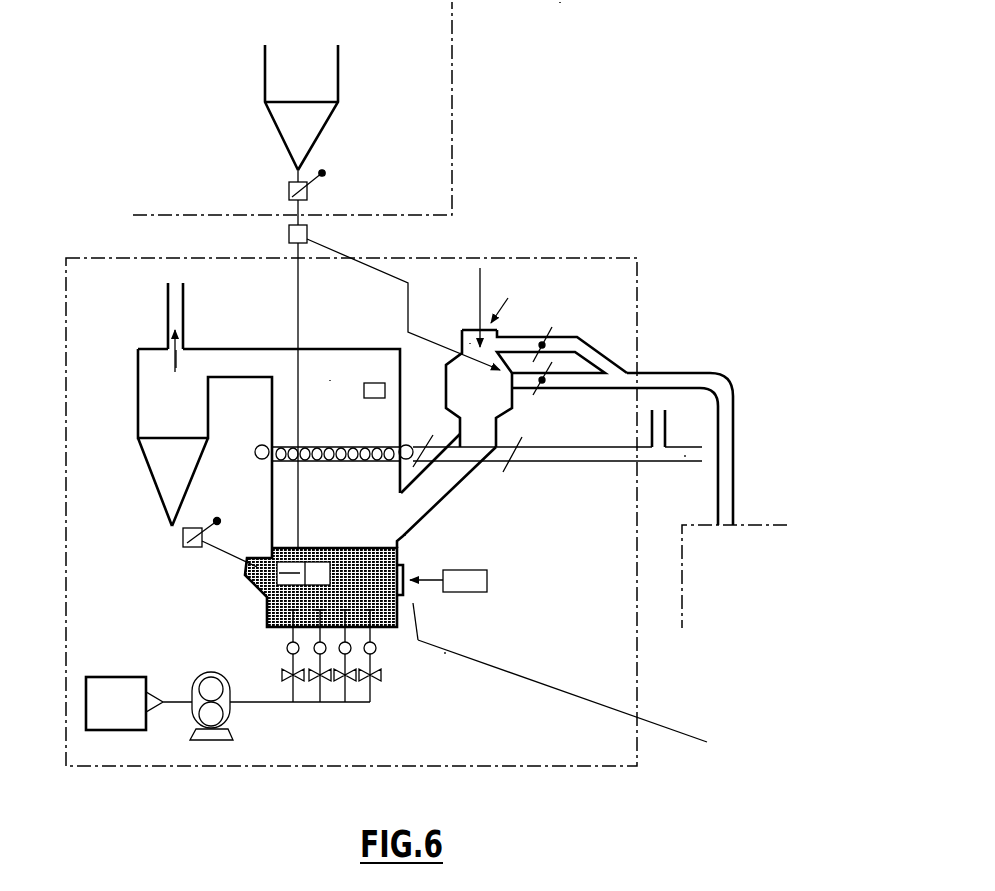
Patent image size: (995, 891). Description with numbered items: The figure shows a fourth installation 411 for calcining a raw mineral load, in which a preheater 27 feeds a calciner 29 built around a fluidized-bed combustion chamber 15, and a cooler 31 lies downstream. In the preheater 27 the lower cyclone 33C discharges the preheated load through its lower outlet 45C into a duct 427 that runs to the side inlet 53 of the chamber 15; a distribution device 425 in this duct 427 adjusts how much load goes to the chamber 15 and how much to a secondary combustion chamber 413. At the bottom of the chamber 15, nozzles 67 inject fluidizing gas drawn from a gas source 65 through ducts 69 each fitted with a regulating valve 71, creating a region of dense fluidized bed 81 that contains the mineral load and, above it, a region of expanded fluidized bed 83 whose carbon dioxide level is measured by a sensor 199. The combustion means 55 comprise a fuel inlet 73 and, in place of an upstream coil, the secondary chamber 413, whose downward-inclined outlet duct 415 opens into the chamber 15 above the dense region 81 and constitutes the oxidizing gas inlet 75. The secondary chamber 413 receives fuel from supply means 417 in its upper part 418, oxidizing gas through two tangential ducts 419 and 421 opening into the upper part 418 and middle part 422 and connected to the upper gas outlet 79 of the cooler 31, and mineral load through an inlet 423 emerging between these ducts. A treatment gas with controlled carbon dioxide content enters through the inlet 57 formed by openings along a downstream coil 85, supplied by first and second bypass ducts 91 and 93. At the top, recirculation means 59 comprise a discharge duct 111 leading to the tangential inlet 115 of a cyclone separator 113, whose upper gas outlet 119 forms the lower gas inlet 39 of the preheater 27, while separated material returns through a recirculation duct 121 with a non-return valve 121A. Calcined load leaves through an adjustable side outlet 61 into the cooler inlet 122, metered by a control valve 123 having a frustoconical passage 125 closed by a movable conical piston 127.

The lower cyclone 33C is at (323, 78).
The lower outlet of the lower cyclone 45C is at (308, 207).
The preheater 27 is at (458, 148).
The installation 411 is at (614, 176).
The distribution device 425 is at (289, 232).
The duct 427 is at (292, 253).
The calciner 29 is at (64, 416).
The fluidized-bed combustion chamber 15 is at (322, 340).
The recirculation means 59 is at (135, 404).
The lower inlet for introducing gases 39 is at (168, 312).
The upper outlet for discharging gas 119 is at (168, 356).
The tangential inlet 115 is at (210, 360).
The discharge duct 111 is at (238, 368).
The cyclone separator 113 is at (137, 423).
The region of expanded fluidized bed 83 is at (336, 407).
The sensor 199 is at (376, 383).
The inlet for introducing a treatment gas 57 is at (410, 432).
The downstream coil 85 is at (257, 454).
The combustion means 55 is at (532, 473).
The outlet duct 415 is at (462, 473).
The middle part 422 is at (496, 416).
The means for supplying fuel 417 is at (480, 285).
The secondary combustion chamber 413 is at (508, 298).
The upper part 418 is at (470, 343).
The duct for injecting oxidizing gas 419 is at (568, 340).
The inlet for supplying mineral load 423 is at (500, 371).
The duct for injecting oxidizing gas 421 is at (576, 380).
The upper outlet for discharging gases 79 is at (686, 383).
The first bypass duct 91 is at (652, 425).
The second bypass duct 93 is at (686, 457).
The cooler 31 is at (755, 550).
The region of dense fluidized bed 81 is at (321, 587).
The inlet for introducing the preheated mineral load 53 is at (260, 583).
The inlet for supplying fuel 73 is at (318, 562).
The inlet for injecting an oxidizing gas 75 is at (414, 535).
The frustoconical flow passage 125 is at (422, 564).
The movable conical piston 127 is at (443, 593).
The recirculation duct 121 is at (182, 530).
The non-return valve 121A is at (187, 548).
The nozzles 67 is at (278, 628).
The control valve 123 is at (433, 615).
The inlet for supplying material 122 is at (537, 682).
The adjustable side outlet 61 is at (446, 654).
The gas source 65 is at (128, 716).
The duct 69 is at (292, 688).
The regulating valve 71 is at (328, 685).